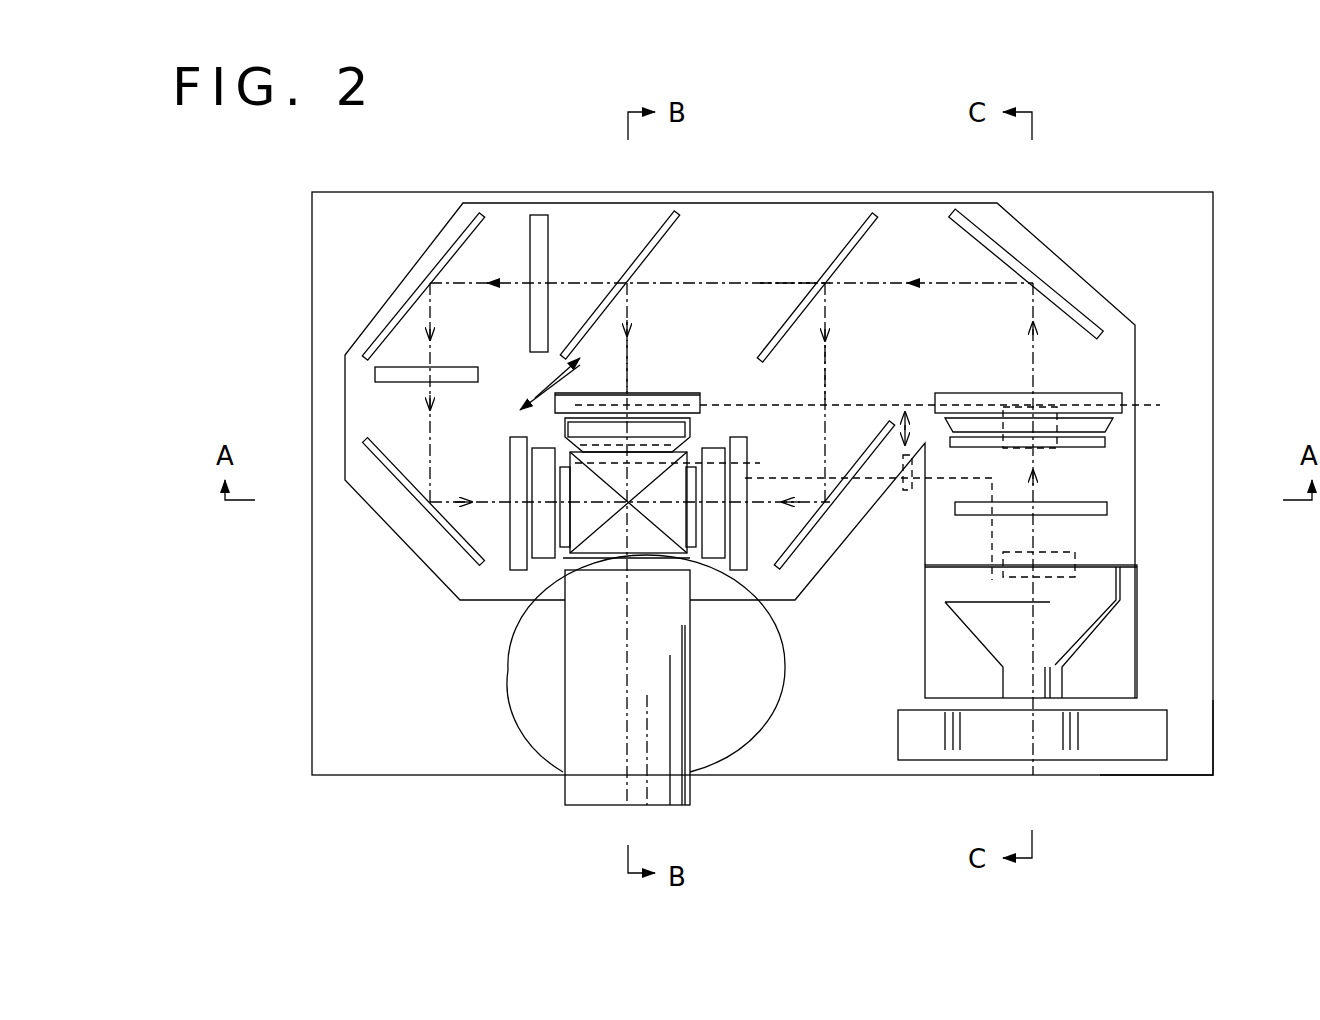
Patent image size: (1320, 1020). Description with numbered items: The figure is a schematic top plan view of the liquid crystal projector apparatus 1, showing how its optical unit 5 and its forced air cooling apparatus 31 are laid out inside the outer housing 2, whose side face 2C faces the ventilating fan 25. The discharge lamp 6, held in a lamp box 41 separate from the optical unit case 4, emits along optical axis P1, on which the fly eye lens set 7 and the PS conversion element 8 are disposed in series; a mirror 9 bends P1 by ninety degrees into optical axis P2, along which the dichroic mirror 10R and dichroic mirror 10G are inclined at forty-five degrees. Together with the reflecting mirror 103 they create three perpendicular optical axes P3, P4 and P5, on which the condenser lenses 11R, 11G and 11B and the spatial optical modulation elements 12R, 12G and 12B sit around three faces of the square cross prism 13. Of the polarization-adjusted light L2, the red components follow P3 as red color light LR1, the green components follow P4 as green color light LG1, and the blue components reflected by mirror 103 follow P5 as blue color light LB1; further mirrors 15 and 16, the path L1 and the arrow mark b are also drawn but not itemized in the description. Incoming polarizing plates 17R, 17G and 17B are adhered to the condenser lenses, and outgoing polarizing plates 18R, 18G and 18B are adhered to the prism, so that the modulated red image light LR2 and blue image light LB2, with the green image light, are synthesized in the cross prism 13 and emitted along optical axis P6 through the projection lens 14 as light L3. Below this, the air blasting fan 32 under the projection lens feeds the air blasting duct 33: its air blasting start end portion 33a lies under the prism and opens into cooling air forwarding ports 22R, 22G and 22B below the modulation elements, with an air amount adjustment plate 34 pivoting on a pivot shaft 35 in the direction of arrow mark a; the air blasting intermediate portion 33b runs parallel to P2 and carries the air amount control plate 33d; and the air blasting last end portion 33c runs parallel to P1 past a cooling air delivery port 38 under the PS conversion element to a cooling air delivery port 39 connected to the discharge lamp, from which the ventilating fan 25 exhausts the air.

The liquid crystal projector apparatus 1 is at (283, 188).
The outer housing 2 is at (305, 243).
The side face 2C is at (1188, 778).
The optical unit case 4 is at (398, 273).
The optical unit 5 is at (577, 256).
The discharge lamp 6 is at (1120, 615).
The fly eye lens set 7 is at (1105, 505).
The PS conversion element 8 is at (1108, 428).
The mirror 9 is at (1095, 318).
The dichroic mirror for G 10G is at (680, 220).
The dichroic mirror for R 10R is at (855, 245).
The condenser lens 11G is at (655, 392).
The condenser lens 11B is at (512, 450).
The condenser lens 11R is at (745, 455).
The spatial optical modulation element 12G is at (735, 445).
The spatial optical modulation element 12B is at (534, 540).
The spatial optical modulation element 12R is at (722, 560).
The cross prism 13 is at (635, 555).
The projection lens 14 is at (575, 785).
The mirror 15 is at (865, 458).
The mirror 16 is at (400, 490).
The polarizing plate 17G is at (570, 400).
The polarizing plate 17B is at (535, 505).
The polarizing plate 17R is at (735, 505).
The polarizing plate 18G is at (565, 410).
The polarizing plate 18B is at (555, 560).
The polarizing plate 18R is at (700, 560).
The cooling air forwarding port 22G is at (620, 392).
The cooling air forwarding port 22B is at (540, 570).
The cooling air forwarding port 22R is at (745, 545).
The ventilating fan 25 is at (1100, 752).
The forced air cooling apparatus 31 is at (902, 745).
The air blasting fan 32 is at (770, 690).
The air blasting duct 33 is at (968, 392).
The air blasting start end portion 33a is at (735, 400).
The air blasting intermediate portion 33b is at (918, 408).
The air blasting last end portion 33c is at (1075, 562).
The air amount control plate 33d is at (905, 490).
The air amount adjustment plate 34 is at (675, 560).
The pivot shaft 35 is at (645, 560).
The cooling air delivery port 38 is at (1125, 402).
The cooling air delivery port 39 is at (1075, 585).
The lamp box 41 is at (1125, 680).
The reflecting mirror 103 is at (462, 237).
The arrow mark a is at (558, 357).
The gap b is at (905, 415).
The optical axis L1 is at (1040, 530).
The light having adjusted polarization direction L2 is at (945, 283).
The optical axis L3 is at (627, 740).
The blue color light LB1 is at (430, 318).
The blue image light LB2 is at (565, 478).
The green color light LG1 is at (628, 318).
The red color light LR1 is at (826, 322).
The red image light LR2 is at (700, 478).
The optical axis P1 is at (1040, 660).
The optical axis P2 is at (700, 283).
The optical axis P3 is at (826, 368).
The optical axis P4 is at (628, 348).
The optical axis P5 is at (400, 400).
The optical axis P6 is at (640, 685).